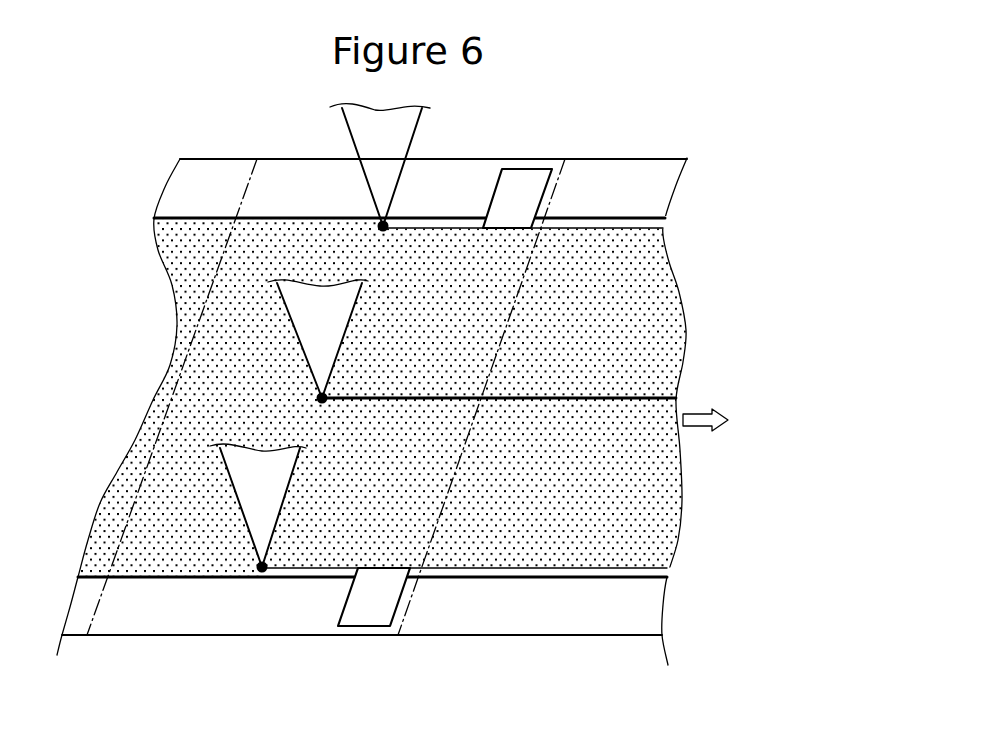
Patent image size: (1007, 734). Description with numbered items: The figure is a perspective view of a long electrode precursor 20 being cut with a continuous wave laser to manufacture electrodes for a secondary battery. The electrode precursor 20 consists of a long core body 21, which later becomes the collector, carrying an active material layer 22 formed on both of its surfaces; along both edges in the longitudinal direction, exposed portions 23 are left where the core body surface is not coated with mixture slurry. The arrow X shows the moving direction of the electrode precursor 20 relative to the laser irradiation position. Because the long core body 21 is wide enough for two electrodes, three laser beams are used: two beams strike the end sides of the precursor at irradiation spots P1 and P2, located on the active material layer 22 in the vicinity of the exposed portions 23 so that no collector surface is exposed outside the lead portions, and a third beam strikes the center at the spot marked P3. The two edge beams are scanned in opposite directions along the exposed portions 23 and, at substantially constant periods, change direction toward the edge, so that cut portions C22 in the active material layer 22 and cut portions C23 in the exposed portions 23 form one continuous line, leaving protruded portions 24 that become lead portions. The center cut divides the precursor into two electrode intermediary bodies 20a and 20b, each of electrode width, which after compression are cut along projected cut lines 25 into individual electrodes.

The electrode precursor 20 is at (663, 133).
The long core body 21 is at (209, 158).
The active material layer 22 is at (205, 350).
The exposed portion 23 is at (615, 180).
The protruded portion 24 is at (520, 180).
The projected cut line 25 is at (100, 603).
The electrode intermediary body 20a is at (662, 329).
The electrode intermediary body 20b is at (660, 490).
The cut portion C22 is at (621, 218).
The cut portion C23 is at (540, 160).
The irradiation spot P1 is at (385, 223).
The irradiation spot P2 is at (262, 578).
The third point P3 is at (322, 405).
The arrow X is at (717, 420).